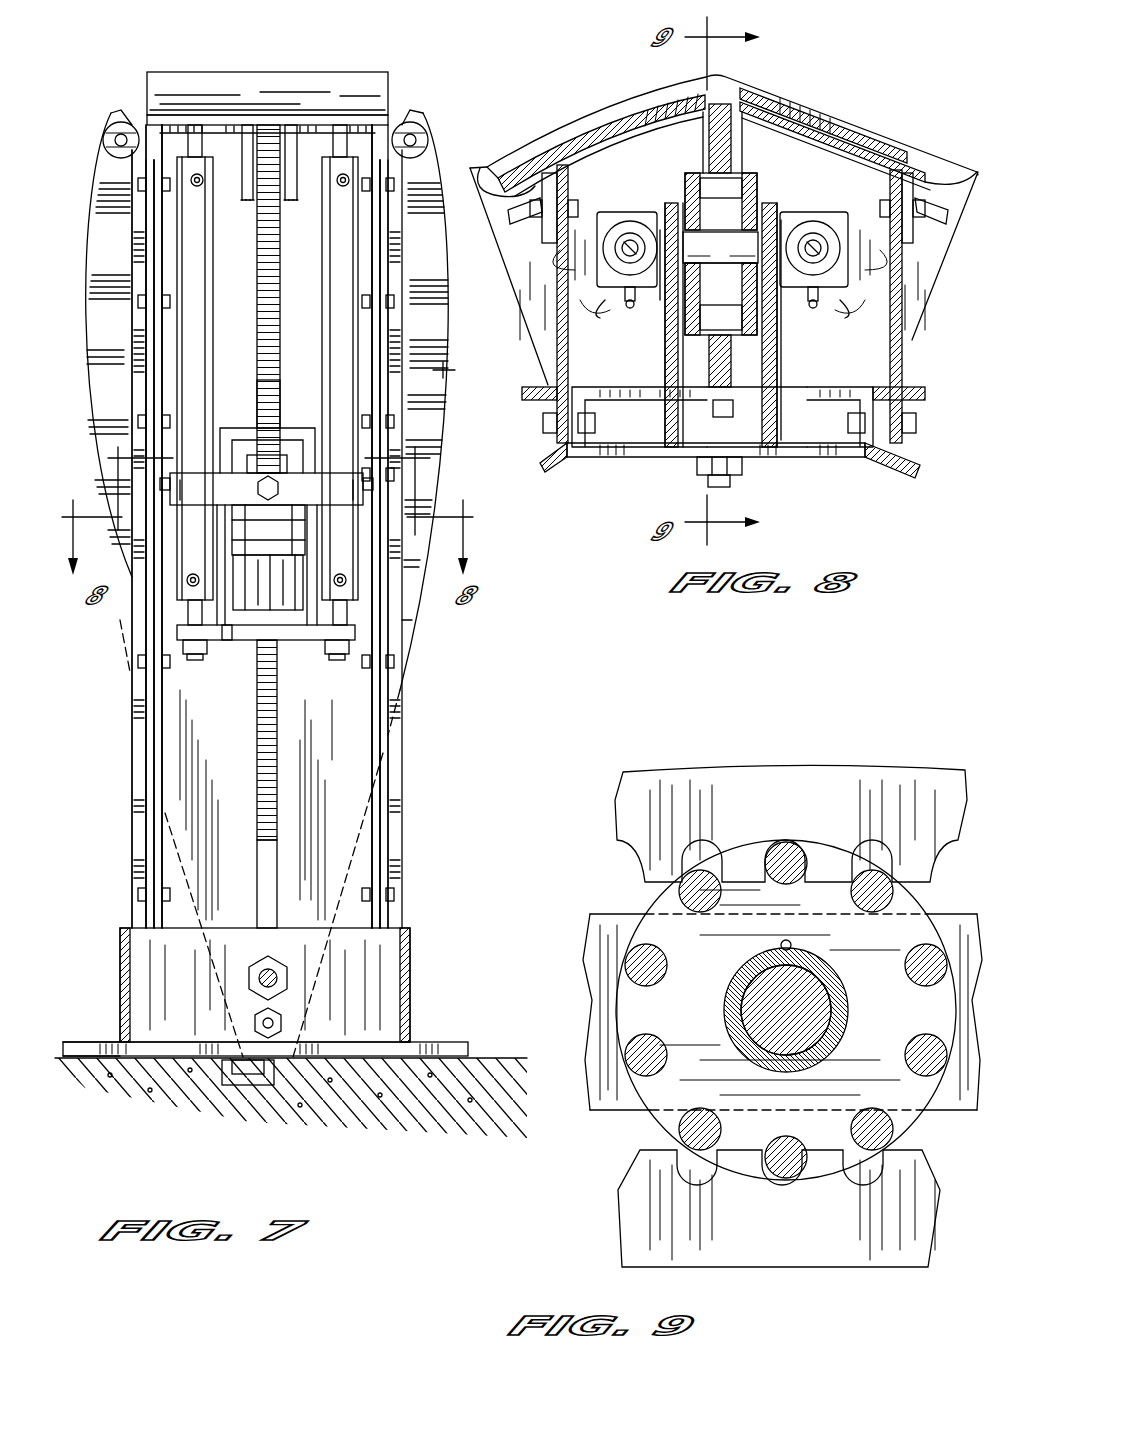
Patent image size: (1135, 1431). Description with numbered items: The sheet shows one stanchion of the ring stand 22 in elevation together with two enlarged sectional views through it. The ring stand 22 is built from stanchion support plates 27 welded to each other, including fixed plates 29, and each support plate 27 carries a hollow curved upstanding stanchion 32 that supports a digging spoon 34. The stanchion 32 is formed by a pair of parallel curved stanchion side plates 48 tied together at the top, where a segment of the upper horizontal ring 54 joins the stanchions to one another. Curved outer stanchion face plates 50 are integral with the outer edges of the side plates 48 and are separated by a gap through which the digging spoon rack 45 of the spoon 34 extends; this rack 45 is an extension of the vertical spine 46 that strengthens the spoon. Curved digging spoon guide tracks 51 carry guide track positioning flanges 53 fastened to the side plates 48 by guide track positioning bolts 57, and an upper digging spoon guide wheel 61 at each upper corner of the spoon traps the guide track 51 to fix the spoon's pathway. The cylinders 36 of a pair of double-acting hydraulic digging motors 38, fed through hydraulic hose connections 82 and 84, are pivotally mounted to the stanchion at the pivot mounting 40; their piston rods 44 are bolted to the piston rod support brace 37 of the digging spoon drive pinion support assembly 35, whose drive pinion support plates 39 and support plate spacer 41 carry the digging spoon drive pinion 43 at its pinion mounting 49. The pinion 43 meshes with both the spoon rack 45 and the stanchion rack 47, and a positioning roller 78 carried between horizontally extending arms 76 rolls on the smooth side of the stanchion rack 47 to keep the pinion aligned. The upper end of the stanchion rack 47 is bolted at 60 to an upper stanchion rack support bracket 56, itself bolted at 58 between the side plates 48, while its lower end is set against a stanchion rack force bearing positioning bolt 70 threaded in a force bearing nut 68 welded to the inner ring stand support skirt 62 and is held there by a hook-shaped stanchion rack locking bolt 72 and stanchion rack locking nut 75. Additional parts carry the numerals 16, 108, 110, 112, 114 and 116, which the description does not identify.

In FIG. 8, the frame plate 16 is at (665, 372).
In FIG. 7, the ring stand 22 is at (420, 1038).
In FIG. 8, the ring stand 22 is at (940, 312).
In FIG. 7, the stanchion support plate 27 is at (72, 1035).
In FIG. 7, the fixed plate 29 is at (468, 1052).
In FIG. 8, the fixed plate 29 is at (928, 298).
In FIG. 7, the stanchion 32 is at (405, 753).
In FIG. 8, the stanchion 32 is at (605, 466).
In FIG. 7, the digging spoon 34 is at (287, 424).
In FIG. 8, the digging spoon 34 is at (822, 116).
In FIG. 8, the digging spoon drive pinion support assembly 35 is at (633, 148).
In FIG. 7, the cylinder 36 is at (205, 283).
In FIG. 8, the cylinder 36 is at (830, 288).
In FIG. 7, the piston rod support brace 37 is at (245, 640).
In FIG. 7, the hydraulic linear piston-cylinder digging motor 38 is at (340, 278).
In FIG. 7, the drive pinion support plate 39 is at (310, 430).
In FIG. 8, the drive pinion support plate 39 is at (778, 212).
In FIG. 9, the drive pinion support plate 39 is at (605, 930).
In FIG. 7, the pivot mounting 40 is at (221, 130).
In FIG. 7, the support plate spacer 41 is at (275, 410).
In FIG. 7, the digging spoon drive pinion 43 is at (285, 575).
In FIG. 8, the digging spoon drive pinion 43 is at (755, 165).
In FIG. 9, the digging spoon drive pinion 43 is at (905, 910).
In FIG. 8, the piston rod 44 is at (630, 240).
In FIG. 7, the digging spoon rack 45 is at (272, 330).
In FIG. 9, the digging spoon rack 45 is at (805, 775).
In FIG. 7, the vertical spine 46 is at (255, 1090).
In FIG. 7, the stanchion rack 47 is at (270, 760).
In FIG. 9, the stanchion rack 47 is at (805, 1245).
In FIG. 7, the stanchion side plate 48 is at (156, 320).
In FIG. 8, the stanchion side plate 48 is at (557, 338).
In FIG. 8, the pinion mounting 49 is at (693, 290).
In FIG. 9, the pinion mounting 49 is at (800, 985).
In FIG. 7, the outer stanchion face plate 50 is at (147, 205).
In FIG. 8, the outer stanchion face plate 50 is at (585, 150).
In FIG. 7, the digging spoon guide track 51 is at (136, 230).
In FIG. 8, the digging spoon guide track 51 is at (510, 182).
In FIG. 7, the guide track positioning flange 53 is at (140, 340).
In FIG. 8, the guide track positioning flange 53 is at (728, 269).
In FIG. 7, the upper horizontal ring 54 is at (338, 72).
In FIG. 8, the upper stanchion rack support bracket 56 is at (896, 388).
In FIG. 7, the guide track positioning bolt 57 is at (138, 183).
In FIG. 8, the guide track positioning bolt 57 is at (543, 420).
In FIG. 7, the bracket bolting 58 is at (400, 474).
In FIG. 8, the bracket bolting 58 is at (548, 432).
In FIG. 8, the rack upper end bolting 60 is at (730, 410).
In FIG. 7, the upper digging spoon guide wheel 61 is at (121, 123).
In FIG. 7, the inner ring stand support skirt 62 is at (372, 930).
In FIG. 8, the inner ring stand support skirt 62 is at (905, 468).
In FIG. 7, the stanchion rack force bearing nut 68 is at (278, 958).
In FIG. 8, the stanchion rack force bearing nut 68 is at (745, 470).
In FIG. 7, the stanchion rack force bearing positioning bolt 70 is at (285, 978).
In FIG. 8, the stanchion rack force bearing positioning bolt 70 is at (730, 487).
In FIG. 7, the stanchion rack locking bolt 72 is at (255, 1023).
In FIG. 7, the stanchion rack locking nut 75 is at (305, 1060).
In FIG. 7, the horizontally extending arm 76 is at (318, 522).
In FIG. 8, the horizontally extending arm 76 is at (778, 357).
In FIG. 7, the digging spoon drive pinion support assembly positioning roller 78 is at (248, 525).
In FIG. 8, the digging spoon drive pinion support assembly positioning roller 78 is at (693, 412).
In FIG. 7, the hydraulic hose connection 82 is at (202, 184).
In FIG. 7, the hydraulic hose connection 84 is at (190, 583).
In FIG. 8, the hydraulic hose connection 84 is at (626, 294).
In FIG. 8, the block 108 is at (758, 210).
In FIG. 9, the block 108 is at (630, 1022).
In FIG. 9, the bolt 110 is at (790, 843).
In FIG. 9, the shaft 112 is at (760, 1003).
In FIG. 8, the bushing 114 is at (720, 247).
In FIG. 9, the bushing 114 is at (845, 1010).
In FIG. 9, the set screw 116 is at (776, 946).